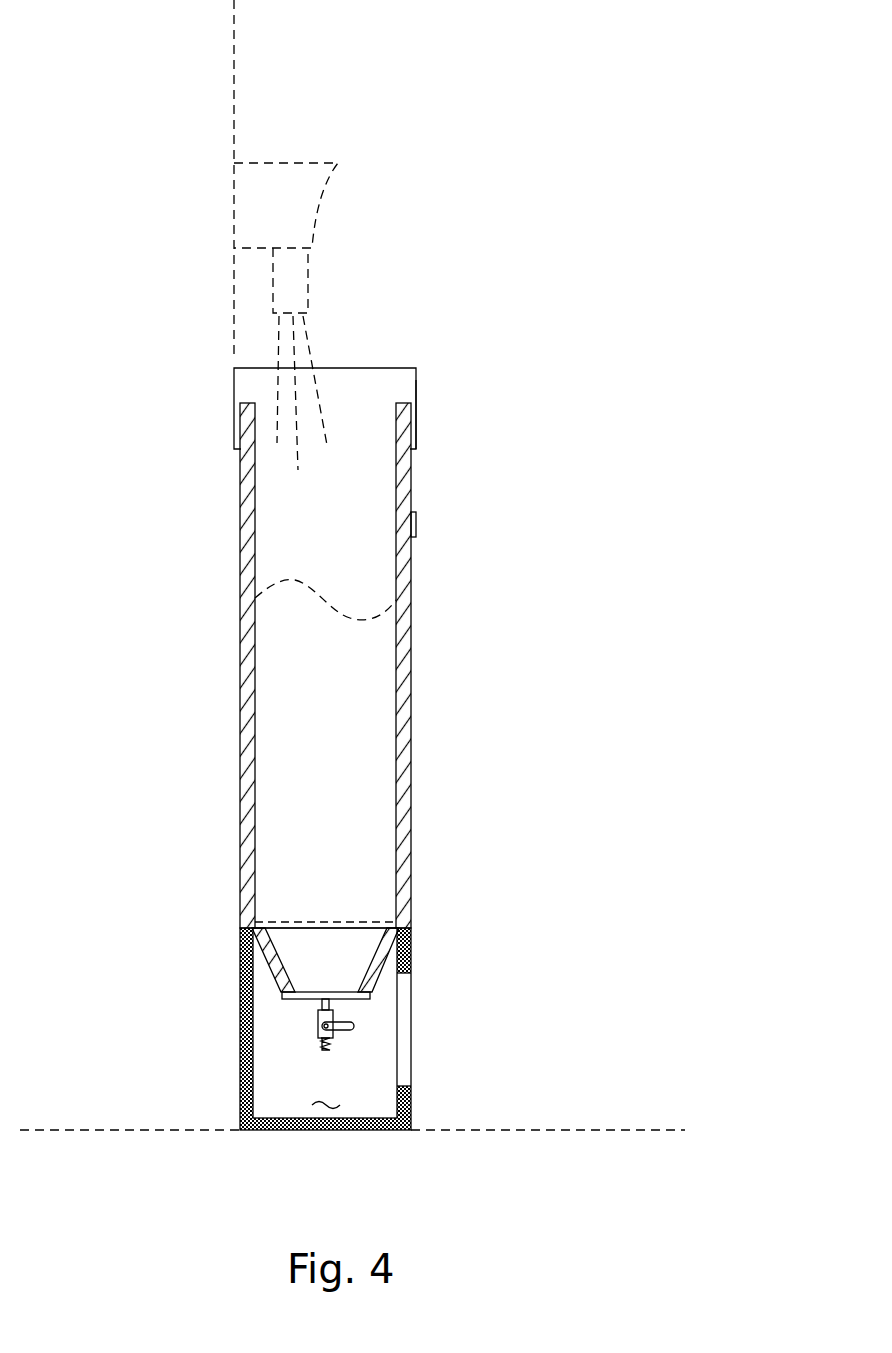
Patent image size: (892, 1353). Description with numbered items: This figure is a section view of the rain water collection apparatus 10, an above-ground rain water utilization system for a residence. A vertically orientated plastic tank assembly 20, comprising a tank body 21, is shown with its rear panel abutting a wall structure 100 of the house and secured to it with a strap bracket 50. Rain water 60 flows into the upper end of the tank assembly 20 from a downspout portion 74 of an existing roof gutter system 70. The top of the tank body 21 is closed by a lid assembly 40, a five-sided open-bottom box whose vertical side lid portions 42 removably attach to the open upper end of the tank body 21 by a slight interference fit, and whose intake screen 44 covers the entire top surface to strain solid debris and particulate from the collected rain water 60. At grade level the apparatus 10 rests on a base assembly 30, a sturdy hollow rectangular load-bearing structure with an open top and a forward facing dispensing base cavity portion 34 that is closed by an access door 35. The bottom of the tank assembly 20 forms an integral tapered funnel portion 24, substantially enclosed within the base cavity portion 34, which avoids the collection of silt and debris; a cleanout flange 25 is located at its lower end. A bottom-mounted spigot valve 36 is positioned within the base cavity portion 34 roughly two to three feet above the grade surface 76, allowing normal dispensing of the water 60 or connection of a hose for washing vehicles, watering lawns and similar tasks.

The rain water collection apparatus 10 is at (661, 425).
The tank assembly 20 is at (442, 889).
The tank body 21 is at (411, 790).
The funnel portion 24 is at (266, 963).
The cleanout flange 25 is at (282, 999).
The base assembly 30 is at (436, 976).
The base cavity portion 34 is at (326, 1108).
The access door 35 is at (411, 1052).
The spigot valve 36 is at (333, 1014).
The lid assembly 40 is at (446, 380).
The side lid portions 42 is at (416, 423).
The intake screen 44 is at (340, 368).
The strap bracket 50 is at (416, 524).
The rain water 60 is at (295, 580).
The roof gutter system 70 is at (300, 205).
The downspout portion 74 is at (273, 291).
The grade surface 76 is at (570, 1130).
The wall structure 100 is at (234, 135).